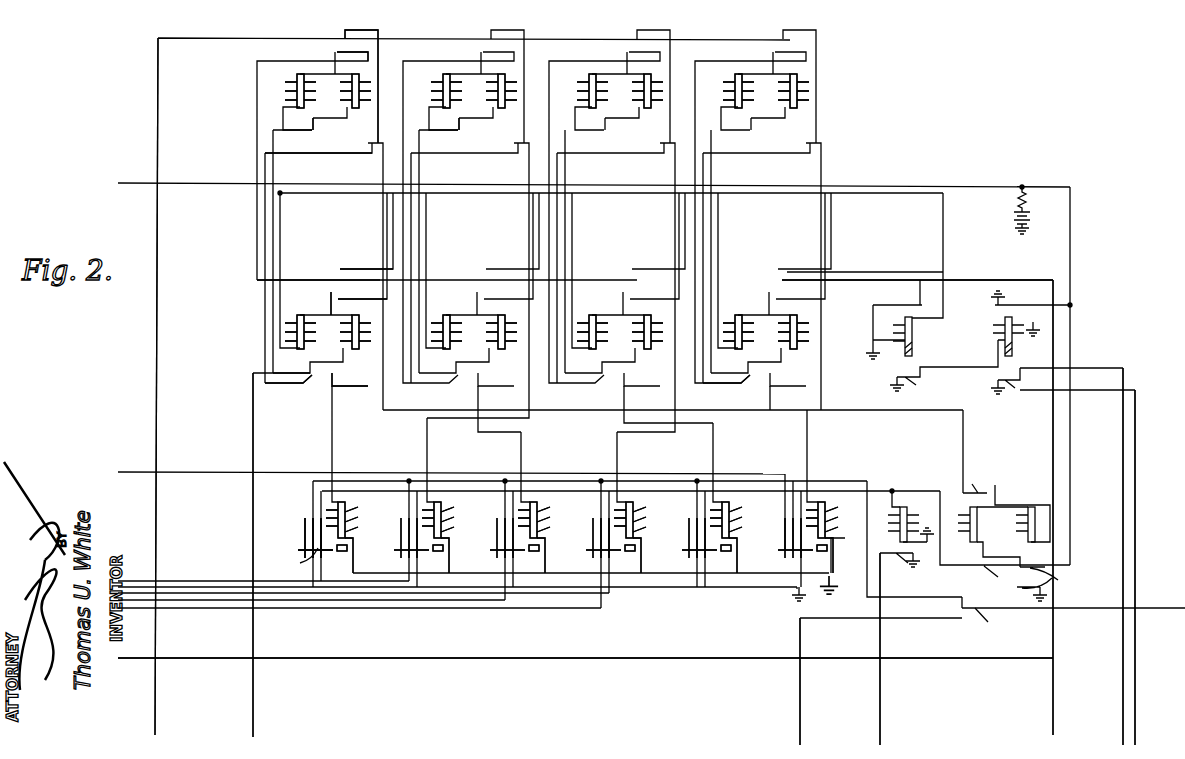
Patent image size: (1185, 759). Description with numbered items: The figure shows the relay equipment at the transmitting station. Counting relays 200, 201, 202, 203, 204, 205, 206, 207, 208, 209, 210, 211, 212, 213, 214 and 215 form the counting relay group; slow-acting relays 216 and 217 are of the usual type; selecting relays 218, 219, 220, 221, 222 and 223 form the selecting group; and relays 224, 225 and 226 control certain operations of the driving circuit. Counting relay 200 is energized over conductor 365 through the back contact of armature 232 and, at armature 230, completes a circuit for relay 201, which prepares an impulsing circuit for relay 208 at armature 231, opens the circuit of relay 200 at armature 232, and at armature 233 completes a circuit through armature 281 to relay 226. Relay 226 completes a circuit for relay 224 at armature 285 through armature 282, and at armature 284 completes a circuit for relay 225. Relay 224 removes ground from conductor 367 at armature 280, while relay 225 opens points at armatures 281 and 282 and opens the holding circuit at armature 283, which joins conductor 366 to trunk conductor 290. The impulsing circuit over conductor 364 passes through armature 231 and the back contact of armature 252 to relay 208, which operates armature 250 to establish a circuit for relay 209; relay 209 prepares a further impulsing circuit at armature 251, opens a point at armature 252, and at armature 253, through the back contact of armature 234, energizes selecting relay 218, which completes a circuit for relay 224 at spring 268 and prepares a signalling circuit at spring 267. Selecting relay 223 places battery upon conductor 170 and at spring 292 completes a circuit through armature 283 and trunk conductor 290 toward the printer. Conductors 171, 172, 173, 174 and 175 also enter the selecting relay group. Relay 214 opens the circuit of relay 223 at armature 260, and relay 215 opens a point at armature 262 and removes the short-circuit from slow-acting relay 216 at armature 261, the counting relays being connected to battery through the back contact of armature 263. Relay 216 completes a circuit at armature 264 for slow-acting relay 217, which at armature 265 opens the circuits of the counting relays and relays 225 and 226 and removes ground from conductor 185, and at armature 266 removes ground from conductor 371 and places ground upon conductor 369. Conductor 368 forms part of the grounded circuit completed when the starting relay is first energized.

The conductor 170 is at (128, 472).
The conductor 171 is at (133, 581).
The conductor 172 is at (170, 587).
The conductor 173 is at (198, 593).
The conductor 174 is at (142, 600).
The conductor 175 is at (206, 608).
The conductor 185 is at (128, 183).
The counting relay 200 is at (288, 91).
The counting relay 201 is at (344, 91).
The counting relay 202 is at (433, 91).
The counting relay 203 is at (489, 91).
The counting relay 204 is at (578, 91).
The counting relay 205 is at (634, 91).
The counting relay 206 is at (725, 91).
The counting relay 207 is at (780, 91).
The counting relay 208 is at (301, 315).
The counting relay 209 is at (342, 332).
The counting relay 210 is at (446, 315).
The counting relay 211 is at (488, 332).
The counting relay 212 is at (592, 315).
The counting relay 213 is at (634, 332).
The counting relay 214 is at (739, 315).
The counting relay 215 is at (780, 332).
The slow-acting relay 216 is at (920, 336).
The slow-acting relay 217 is at (1003, 336).
The selecting relay 218 is at (346, 518).
The selecting relay 219 is at (442, 518).
The selecting relay 220 is at (538, 518).
The selecting relay 221 is at (634, 518).
The selecting relay 222 is at (730, 518).
The selecting relay 223 is at (824, 522).
The relay 224 is at (907, 510).
The relay 225 is at (993, 537).
The relay 226 is at (1030, 508).
The armature 230 is at (312, 131).
The armature 231 is at (363, 30).
The armature 232 is at (336, 53).
The armature 233 is at (348, 153).
The armature 234 is at (459, 132).
The armature 250 is at (298, 384).
The armature 251 is at (355, 263).
The armature 252 is at (340, 296).
The armature 253 is at (351, 386).
The armature 260 is at (742, 384).
The armature 261 is at (787, 272).
The armature 262 is at (782, 280).
The armature 263 is at (915, 308).
The armature 264 is at (914, 385).
The armature 265 is at (1010, 306).
The armature 266 is at (1020, 391).
The spring 267 is at (305, 545).
The spring 268 is at (300, 564).
The armature 280 is at (903, 565).
The armature 281 is at (982, 484).
The armature 282 is at (975, 568).
The armature 283 is at (986, 619).
The armature 284 is at (1058, 580).
The armature 285 is at (1052, 594).
The trunk conductor 290 is at (647, 391).
The spring 292 is at (790, 590).
The conductor 364 is at (155, 716).
The conductor 365 is at (253, 713).
The conductor 366 is at (800, 716).
The conductor 367 is at (880, 716).
The conductor 368 is at (132, 658).
The conductor 369 is at (1123, 716).
The conductor 371 is at (1135, 716).